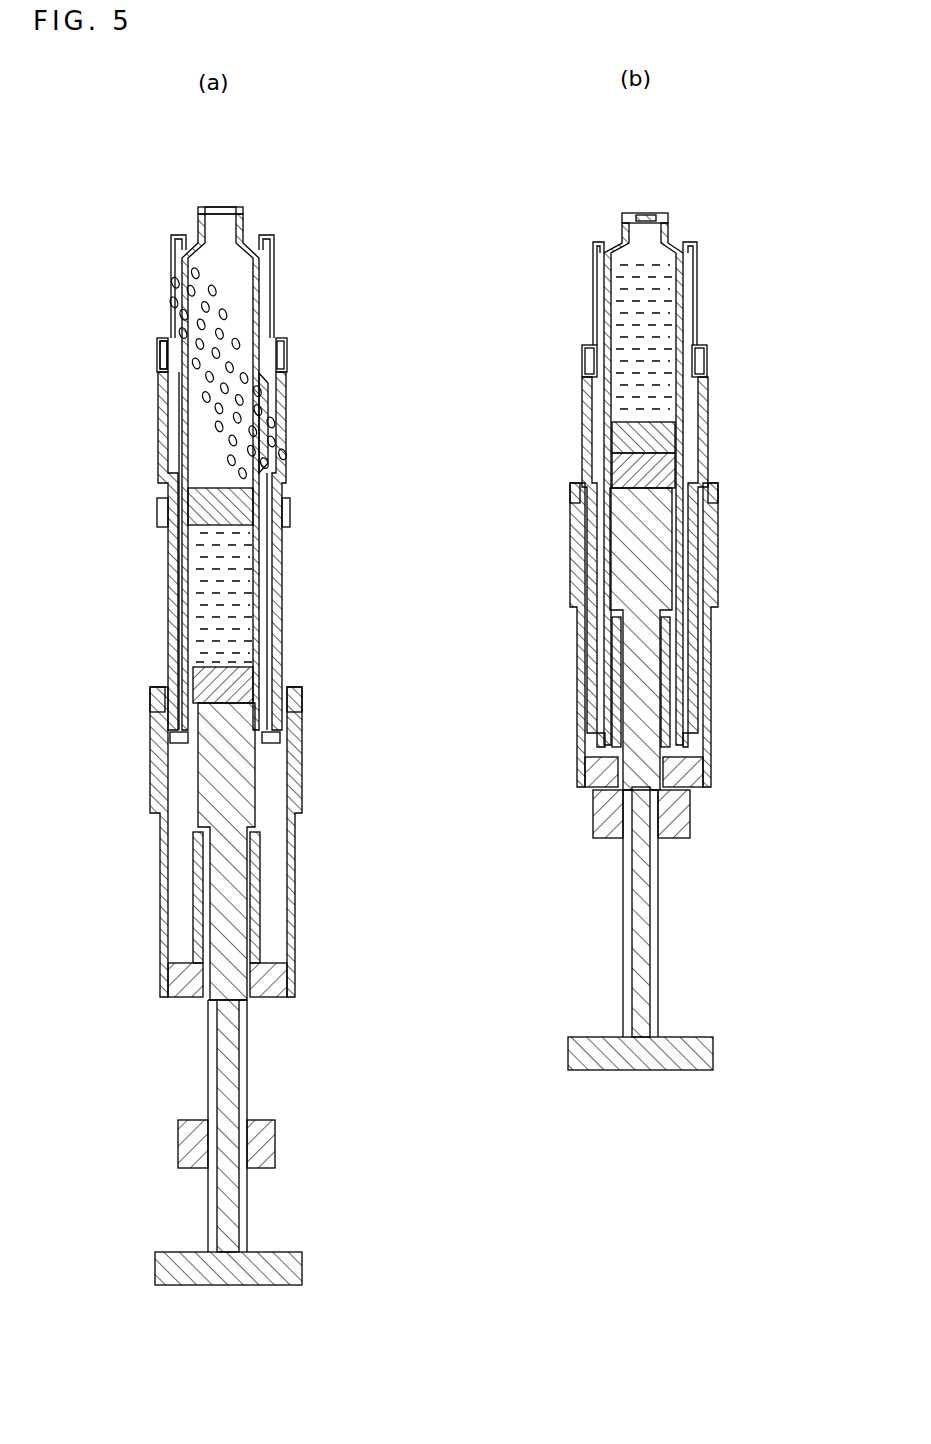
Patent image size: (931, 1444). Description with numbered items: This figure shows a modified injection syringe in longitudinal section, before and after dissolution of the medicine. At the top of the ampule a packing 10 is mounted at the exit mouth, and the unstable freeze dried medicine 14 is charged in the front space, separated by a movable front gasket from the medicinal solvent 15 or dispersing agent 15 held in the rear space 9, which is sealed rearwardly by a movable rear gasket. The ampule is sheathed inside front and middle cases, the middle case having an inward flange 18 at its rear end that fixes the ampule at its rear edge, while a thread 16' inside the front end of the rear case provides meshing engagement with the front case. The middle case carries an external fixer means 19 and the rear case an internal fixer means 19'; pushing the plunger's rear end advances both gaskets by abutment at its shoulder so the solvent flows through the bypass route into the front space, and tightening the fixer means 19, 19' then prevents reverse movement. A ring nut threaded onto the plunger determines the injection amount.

The rear space 9 is at (250, 625).
The packing 10 is at (222, 212).
The unstable freeze dried medicine 14 is at (241, 287).
The medicinal solvent 15 is at (246, 547).
The thread 16' is at (110, 365).
The inward flange 18 is at (180, 738).
The fixer means 19 is at (168, 516).
The fixer means 19' is at (174, 694).